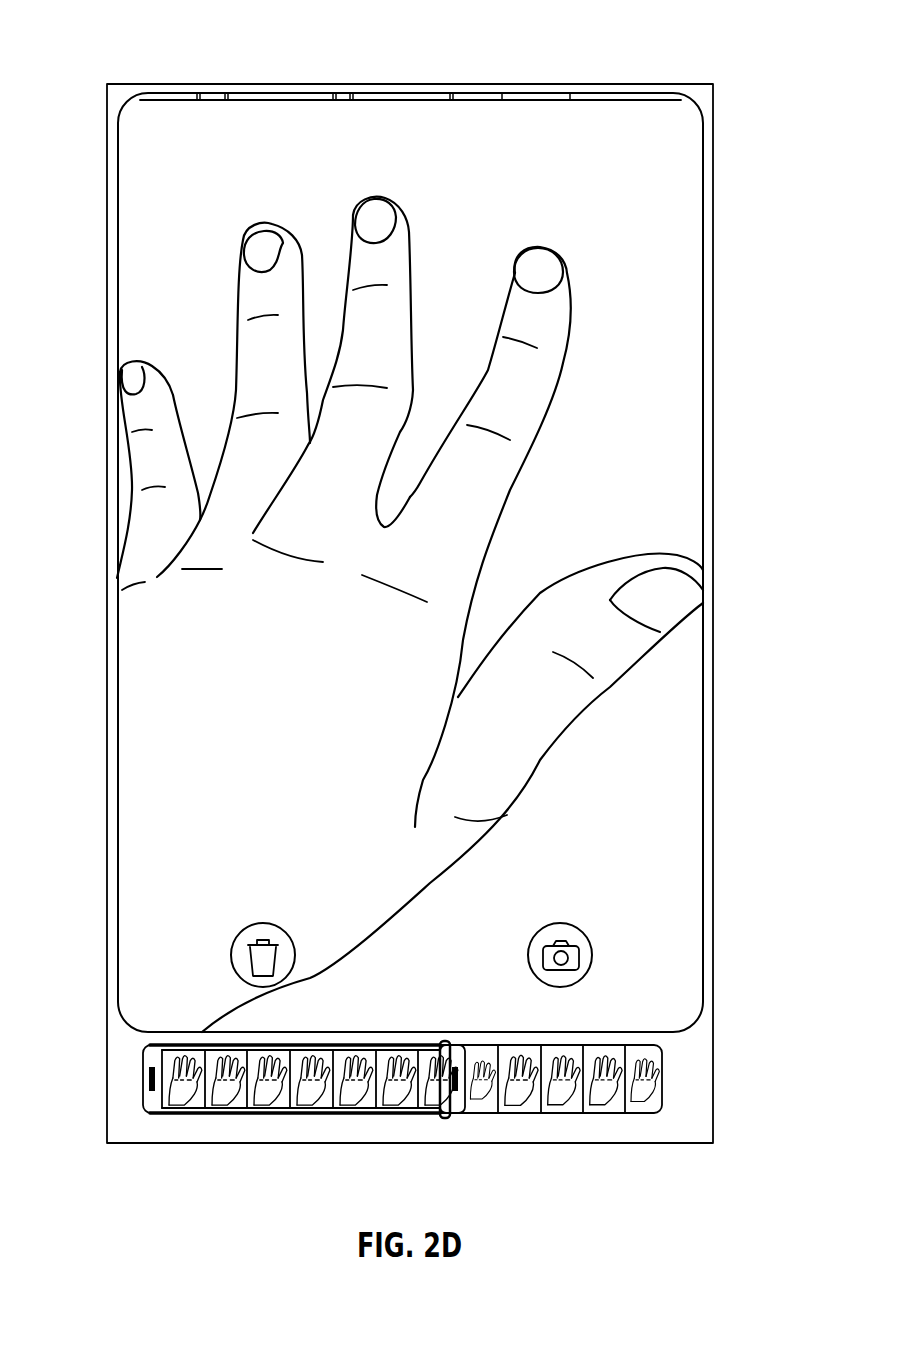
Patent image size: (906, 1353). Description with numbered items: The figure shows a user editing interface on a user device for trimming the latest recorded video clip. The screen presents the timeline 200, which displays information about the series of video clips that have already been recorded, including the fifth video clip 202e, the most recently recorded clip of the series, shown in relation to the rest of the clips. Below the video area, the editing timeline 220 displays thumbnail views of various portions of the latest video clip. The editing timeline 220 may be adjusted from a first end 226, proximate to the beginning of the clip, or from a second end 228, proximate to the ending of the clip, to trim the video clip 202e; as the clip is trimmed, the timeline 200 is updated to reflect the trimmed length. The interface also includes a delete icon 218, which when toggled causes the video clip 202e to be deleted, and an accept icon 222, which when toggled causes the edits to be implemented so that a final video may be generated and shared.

The timeline 200 is at (161, 83).
The fifth video clip 202e is at (481, 100).
The delete icon 218 is at (238, 930).
The accept icon 222 is at (585, 928).
The editing timeline 220 is at (230, 1115).
The first end 226 is at (151, 1097).
The second end 228 is at (455, 1097).